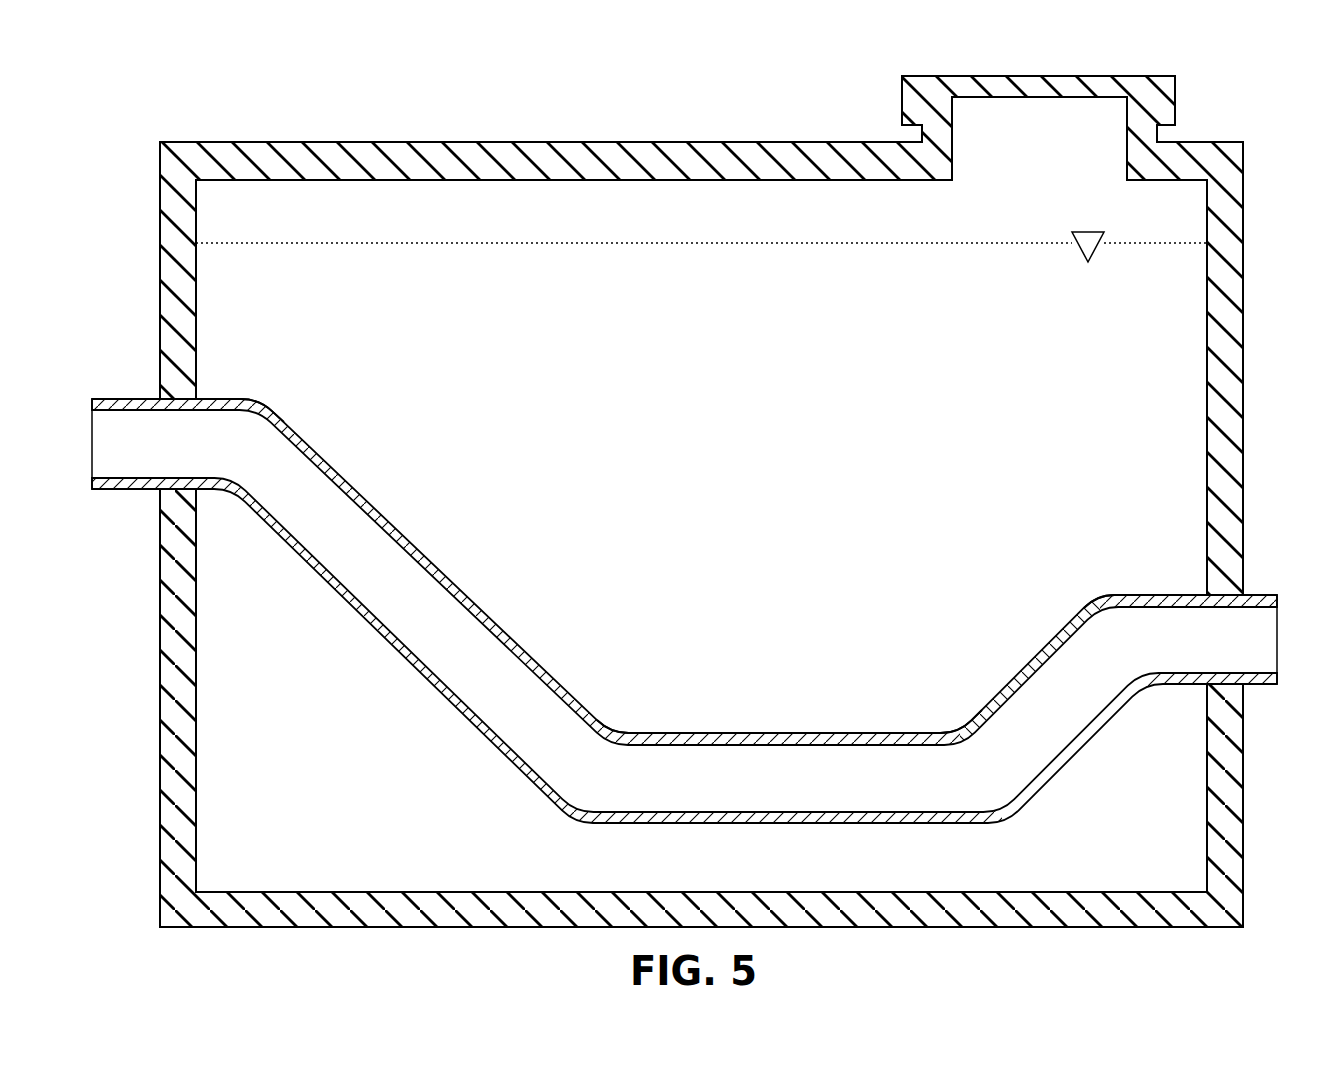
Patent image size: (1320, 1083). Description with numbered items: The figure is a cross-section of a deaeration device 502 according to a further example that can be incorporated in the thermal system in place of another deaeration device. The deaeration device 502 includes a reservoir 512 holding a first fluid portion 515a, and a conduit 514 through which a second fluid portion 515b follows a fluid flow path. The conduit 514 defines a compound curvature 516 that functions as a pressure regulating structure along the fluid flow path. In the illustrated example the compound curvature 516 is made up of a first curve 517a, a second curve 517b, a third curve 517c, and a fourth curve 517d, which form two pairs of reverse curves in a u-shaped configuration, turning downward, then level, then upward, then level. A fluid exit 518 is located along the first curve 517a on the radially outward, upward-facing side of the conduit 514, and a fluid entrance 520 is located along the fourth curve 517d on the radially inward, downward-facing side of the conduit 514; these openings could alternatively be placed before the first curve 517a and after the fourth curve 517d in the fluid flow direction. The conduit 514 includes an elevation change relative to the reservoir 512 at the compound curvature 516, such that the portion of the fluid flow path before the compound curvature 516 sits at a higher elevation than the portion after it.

The deaeration device 502 is at (670, 497).
The reservoir 512 is at (528, 142).
The conduit 514 is at (1257, 594).
The first fluid portion 515a is at (701, 280).
The second fluid portion 515b is at (200, 443).
The compound curvature 516 is at (687, 598).
The first curve 517a is at (266, 400).
The second curve 517b is at (610, 733).
The third curve 517c is at (957, 734).
The fourth curve 517d is at (1105, 596).
The fluid exit 518 is at (303, 447).
The fluid entrance 520 is at (1100, 717).